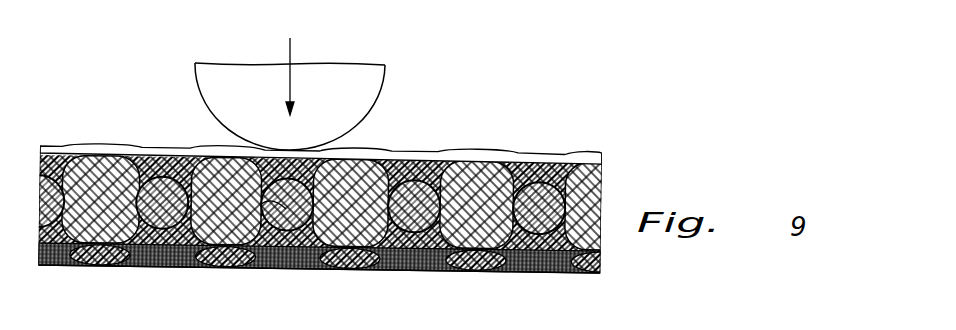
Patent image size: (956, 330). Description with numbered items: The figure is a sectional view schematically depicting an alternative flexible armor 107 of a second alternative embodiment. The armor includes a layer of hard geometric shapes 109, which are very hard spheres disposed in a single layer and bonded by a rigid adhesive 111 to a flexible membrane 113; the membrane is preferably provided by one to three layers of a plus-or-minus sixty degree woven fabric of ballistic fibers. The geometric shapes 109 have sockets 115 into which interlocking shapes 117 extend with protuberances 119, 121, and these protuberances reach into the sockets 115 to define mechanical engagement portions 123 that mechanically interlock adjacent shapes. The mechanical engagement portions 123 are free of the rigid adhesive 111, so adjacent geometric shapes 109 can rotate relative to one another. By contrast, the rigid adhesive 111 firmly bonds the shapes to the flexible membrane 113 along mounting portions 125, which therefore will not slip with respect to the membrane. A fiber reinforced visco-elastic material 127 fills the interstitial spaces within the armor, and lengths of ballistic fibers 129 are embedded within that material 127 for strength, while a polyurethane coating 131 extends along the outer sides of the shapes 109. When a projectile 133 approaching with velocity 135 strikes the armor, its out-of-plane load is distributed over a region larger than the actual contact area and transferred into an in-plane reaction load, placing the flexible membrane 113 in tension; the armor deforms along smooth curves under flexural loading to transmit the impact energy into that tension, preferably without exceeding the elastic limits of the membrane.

The alternative flexible armor 107 is at (92, 145).
The geometric shapes 109 is at (102, 163).
The rigid adhesive 111 is at (97, 258).
The flexible membrane 113 is at (167, 260).
The sockets 115 is at (285, 212).
The interlocking shapes 117 is at (291, 207).
The protuberance 119 is at (390, 200).
The protuberance 121 is at (437, 205).
The mechanical engagement portions 123 is at (442, 187).
The mounting portions 125 is at (482, 266).
The fiber reinforced visco-elastic material 127 is at (562, 163).
The ballistic fibers 129 is at (528, 178).
The polyurethane coating 131 is at (170, 153).
The projectile 133 is at (386, 64).
The velocity 135 is at (291, 40).